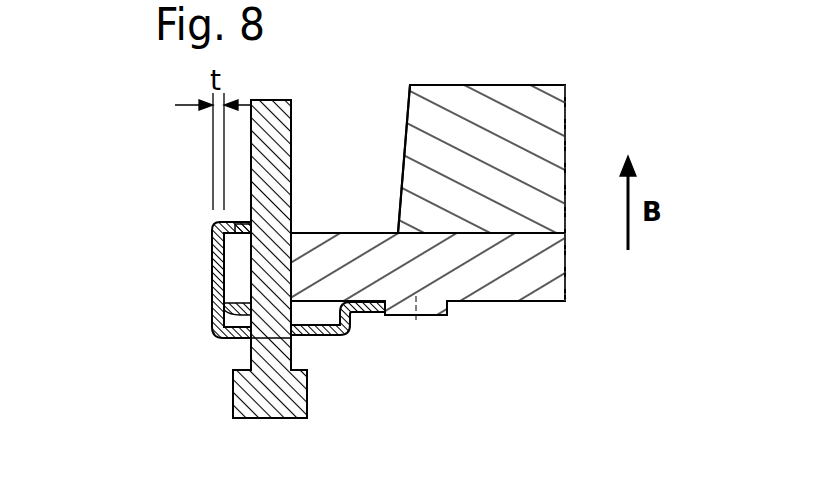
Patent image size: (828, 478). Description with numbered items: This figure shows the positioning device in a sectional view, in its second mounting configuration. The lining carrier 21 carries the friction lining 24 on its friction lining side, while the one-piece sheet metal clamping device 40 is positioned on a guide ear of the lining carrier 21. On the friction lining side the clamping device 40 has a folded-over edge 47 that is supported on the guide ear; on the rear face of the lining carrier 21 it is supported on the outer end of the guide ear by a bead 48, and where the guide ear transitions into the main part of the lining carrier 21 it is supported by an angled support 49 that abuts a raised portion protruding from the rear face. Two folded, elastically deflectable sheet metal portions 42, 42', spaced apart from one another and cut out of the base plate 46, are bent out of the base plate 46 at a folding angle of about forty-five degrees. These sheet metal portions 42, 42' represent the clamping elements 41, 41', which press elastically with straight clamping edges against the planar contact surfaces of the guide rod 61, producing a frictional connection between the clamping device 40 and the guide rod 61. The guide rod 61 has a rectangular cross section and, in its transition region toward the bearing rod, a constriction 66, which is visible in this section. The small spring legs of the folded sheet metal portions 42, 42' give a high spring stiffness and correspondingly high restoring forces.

The lining carrier 21 is at (538, 268).
The friction lining 24 is at (518, 142).
The clamping device 40 is at (213, 272).
The clamping element 41 is at (126, 360).
The clamping element 41' is at (414, 366).
The folded sheet metal portion 42 is at (200, 385).
The folded sheet metal portion 42' is at (337, 391).
The base plate 46 is at (332, 338).
The folded-over edge 47 is at (235, 225).
The bead 48 is at (240, 310).
The angled support 49 is at (372, 310).
The guide rod 61 is at (263, 155).
The constriction 66 is at (260, 337).